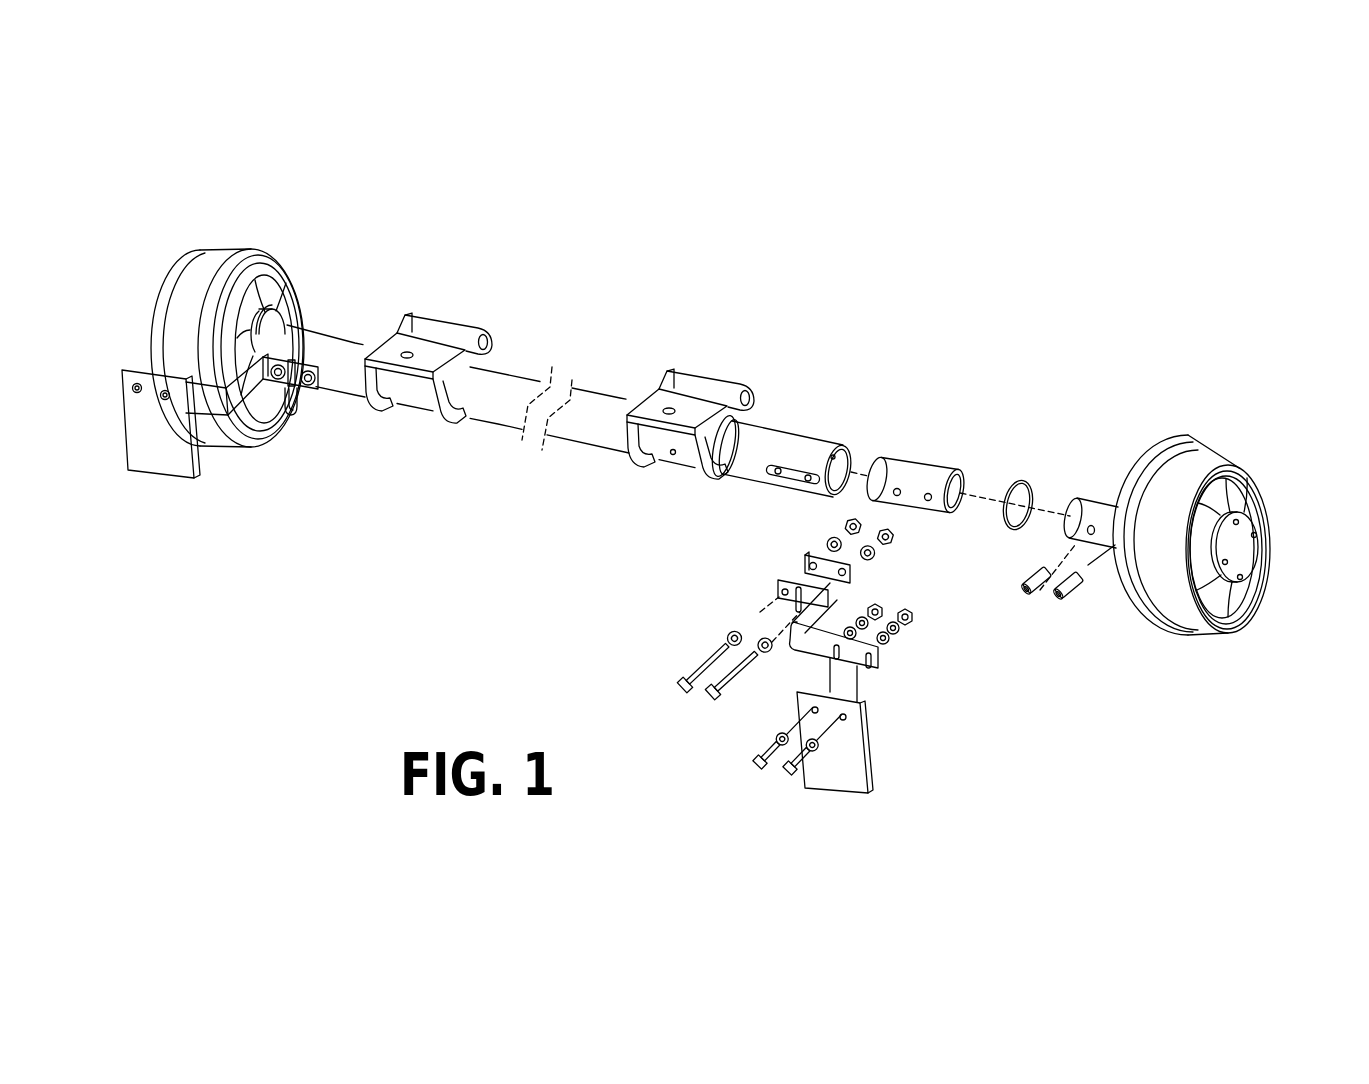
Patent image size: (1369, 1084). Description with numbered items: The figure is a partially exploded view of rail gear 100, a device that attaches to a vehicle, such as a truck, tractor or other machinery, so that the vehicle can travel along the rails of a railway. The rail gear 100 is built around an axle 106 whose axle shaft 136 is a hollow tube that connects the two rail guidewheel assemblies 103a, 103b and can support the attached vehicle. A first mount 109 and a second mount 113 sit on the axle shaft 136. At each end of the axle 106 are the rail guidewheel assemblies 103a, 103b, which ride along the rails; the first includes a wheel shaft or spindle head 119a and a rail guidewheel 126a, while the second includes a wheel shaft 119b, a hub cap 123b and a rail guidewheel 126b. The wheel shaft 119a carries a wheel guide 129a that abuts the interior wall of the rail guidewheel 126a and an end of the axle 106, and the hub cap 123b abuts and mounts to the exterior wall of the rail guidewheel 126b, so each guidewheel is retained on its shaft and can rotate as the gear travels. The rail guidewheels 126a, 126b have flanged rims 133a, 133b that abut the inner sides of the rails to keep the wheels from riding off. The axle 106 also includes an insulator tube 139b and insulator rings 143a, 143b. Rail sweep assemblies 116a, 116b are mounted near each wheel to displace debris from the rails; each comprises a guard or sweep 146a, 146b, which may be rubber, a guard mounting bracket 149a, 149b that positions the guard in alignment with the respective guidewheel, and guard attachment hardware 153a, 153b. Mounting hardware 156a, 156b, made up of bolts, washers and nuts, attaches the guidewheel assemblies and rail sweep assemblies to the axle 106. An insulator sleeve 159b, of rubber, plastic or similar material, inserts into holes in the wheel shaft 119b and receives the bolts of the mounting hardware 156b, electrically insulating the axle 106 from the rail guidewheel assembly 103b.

The rail gear 100 is at (889, 215).
The rail guidewheel assembly 103a is at (188, 256).
The rail guidewheel assembly 103b is at (1242, 463).
The axle 106 is at (522, 388).
The first mount 109 is at (445, 328).
The second mount 113 is at (707, 383).
The rail sweep assembly 116a is at (185, 470).
The rail sweep assembly 116b is at (855, 788).
The wheel shaft 119a is at (273, 288).
The wheel shaft 119b is at (1083, 505).
The hub cap 123b is at (1240, 555).
The rail guidewheel 126a is at (197, 305).
The rail guidewheel 126b is at (1165, 597).
The wheel guide 129a is at (275, 317).
The flanged rim 133a is at (250, 256).
The flanged rim 133b is at (1190, 443).
The axle shaft 136 is at (578, 425).
The insulator tube 139b is at (903, 472).
The insulator ring 143a is at (270, 333).
The insulator ring 143b is at (1015, 480).
The guard 146a is at (150, 433).
The guard 146b is at (845, 767).
The guard mounting bracket 149a is at (309, 397).
The guard mounting bracket 149b is at (878, 657).
The guard attachment hardware 153a is at (132, 390).
The guard attachment hardware 153b is at (758, 758).
The mounting hardware 156a is at (287, 412).
The mounting hardware 156b is at (687, 683).
The insulator sleeve 159b is at (1048, 597).